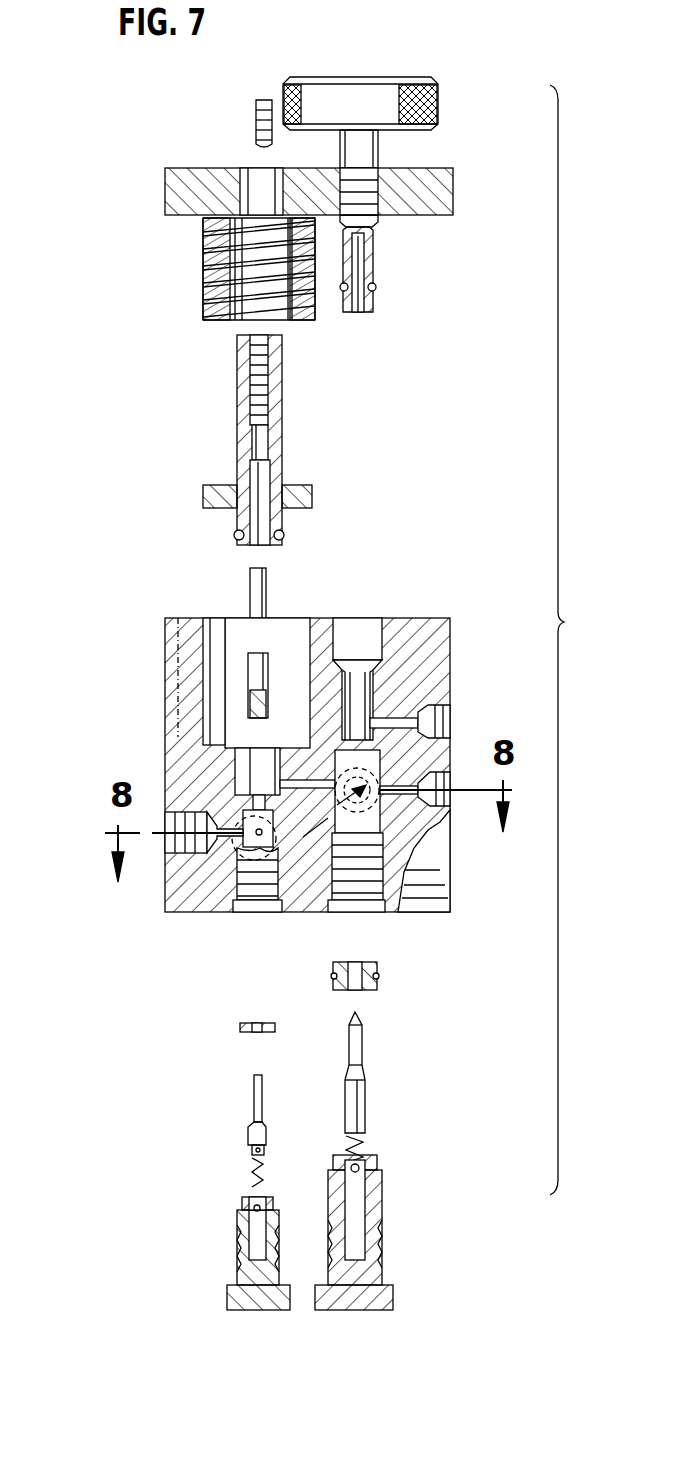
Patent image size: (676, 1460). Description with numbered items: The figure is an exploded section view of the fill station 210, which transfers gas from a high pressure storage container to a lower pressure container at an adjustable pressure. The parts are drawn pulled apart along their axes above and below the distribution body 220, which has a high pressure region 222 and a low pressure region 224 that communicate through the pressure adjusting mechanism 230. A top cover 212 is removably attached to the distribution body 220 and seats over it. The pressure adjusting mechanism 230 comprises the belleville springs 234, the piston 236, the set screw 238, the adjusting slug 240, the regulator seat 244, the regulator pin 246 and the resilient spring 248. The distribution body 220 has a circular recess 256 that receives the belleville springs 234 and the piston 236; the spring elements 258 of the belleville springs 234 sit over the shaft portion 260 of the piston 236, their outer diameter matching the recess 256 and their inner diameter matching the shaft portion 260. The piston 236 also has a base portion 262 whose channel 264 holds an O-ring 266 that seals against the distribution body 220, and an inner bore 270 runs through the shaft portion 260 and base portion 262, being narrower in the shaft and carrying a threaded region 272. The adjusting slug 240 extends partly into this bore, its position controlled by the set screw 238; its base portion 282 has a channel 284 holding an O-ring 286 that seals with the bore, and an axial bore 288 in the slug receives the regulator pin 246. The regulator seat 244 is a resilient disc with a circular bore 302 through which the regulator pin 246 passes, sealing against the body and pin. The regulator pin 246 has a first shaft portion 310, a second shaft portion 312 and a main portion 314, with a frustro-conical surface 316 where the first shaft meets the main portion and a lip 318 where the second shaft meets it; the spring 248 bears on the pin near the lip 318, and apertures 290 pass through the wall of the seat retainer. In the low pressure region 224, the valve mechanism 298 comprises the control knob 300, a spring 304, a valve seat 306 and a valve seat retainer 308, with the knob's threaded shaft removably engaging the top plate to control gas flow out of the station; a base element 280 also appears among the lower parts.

The fill station 210 is at (583, 640).
The top cover 212 is at (165, 200).
The distribution body 220 is at (165, 632).
The high pressure region 222 is at (185, 818).
The low pressure region 224 is at (440, 862).
The pressure adjusting mechanism 230 is at (157, 360).
The belleville springs 234 is at (205, 262).
The piston 236 is at (205, 496).
The set screw 238 is at (255, 128).
The adjusting slug 240 is at (266, 588).
The regulator seat 244 is at (243, 1027).
The regulator pin 246 is at (254, 1100).
The resilient spring 248 is at (252, 1165).
The circular recess 256 is at (220, 640).
The spring elements 258 is at (316, 305).
The shaft portion 260 is at (282, 388).
The base portion 262 is at (305, 488).
The channel 264 is at (278, 555).
The O-ring 266 is at (234, 535).
The inner bore 270 is at (252, 450).
The threaded region 272 is at (250, 400).
The base 280 is at (266, 612).
The base portion 282 is at (250, 680).
The channel 284 is at (200, 915).
The O-ring 286 is at (255, 1237).
The axial bore 288 is at (243, 1200).
The apertures 290 is at (275, 1220).
The valve mechanism 298 is at (340, 70).
The control knob 300 is at (386, 78).
The circular bore 302 is at (257, 1020).
The spring 304 is at (366, 1147).
The valve seat 306 is at (378, 985).
The valve seat retainer 308 is at (393, 1295).
The first shaft portion 310 is at (300, 80).
The second shaft portion 312 is at (380, 152).
The main portion 314 is at (378, 216).
The frustro-conical surface 316 is at (373, 300).
The lip 318 is at (376, 287).